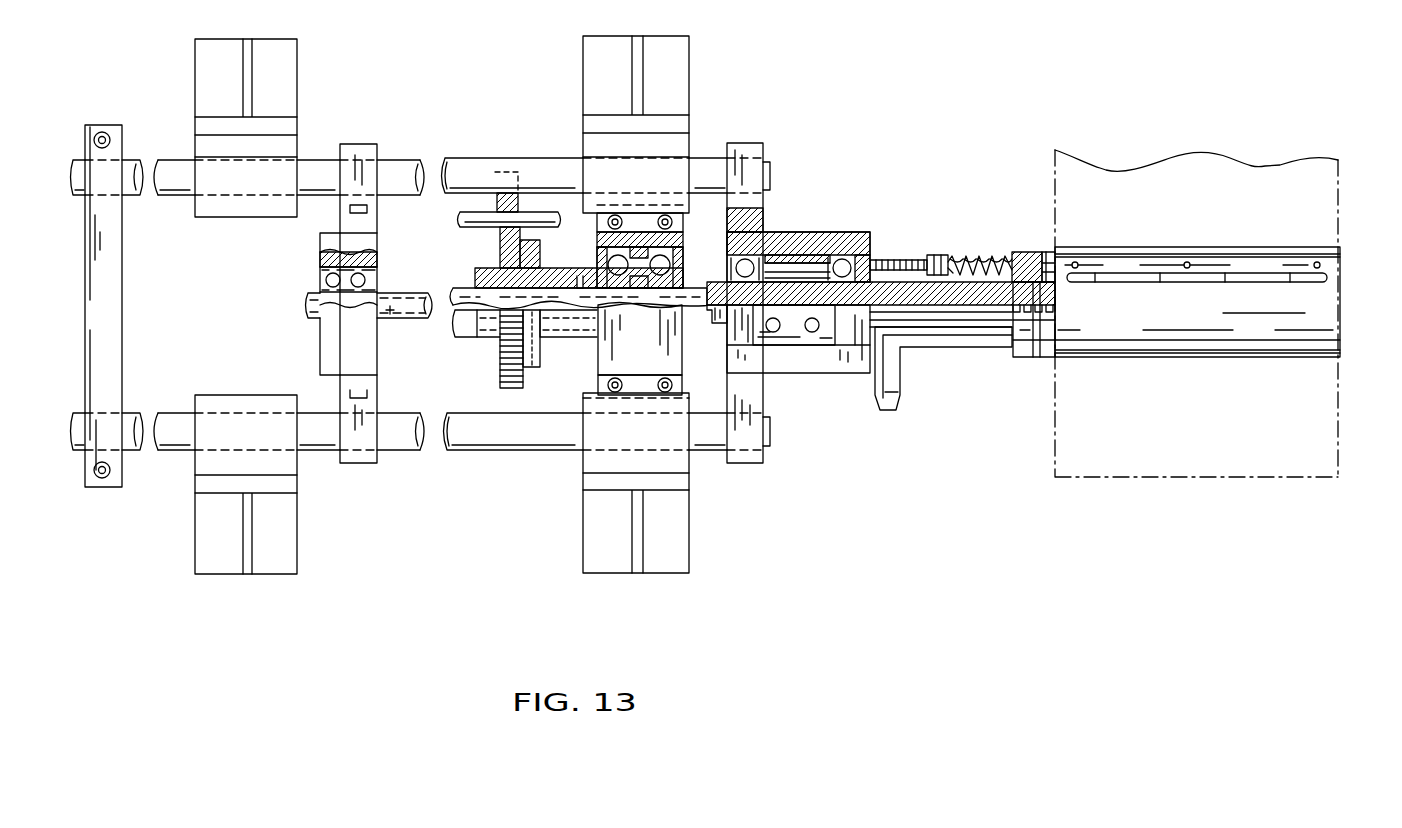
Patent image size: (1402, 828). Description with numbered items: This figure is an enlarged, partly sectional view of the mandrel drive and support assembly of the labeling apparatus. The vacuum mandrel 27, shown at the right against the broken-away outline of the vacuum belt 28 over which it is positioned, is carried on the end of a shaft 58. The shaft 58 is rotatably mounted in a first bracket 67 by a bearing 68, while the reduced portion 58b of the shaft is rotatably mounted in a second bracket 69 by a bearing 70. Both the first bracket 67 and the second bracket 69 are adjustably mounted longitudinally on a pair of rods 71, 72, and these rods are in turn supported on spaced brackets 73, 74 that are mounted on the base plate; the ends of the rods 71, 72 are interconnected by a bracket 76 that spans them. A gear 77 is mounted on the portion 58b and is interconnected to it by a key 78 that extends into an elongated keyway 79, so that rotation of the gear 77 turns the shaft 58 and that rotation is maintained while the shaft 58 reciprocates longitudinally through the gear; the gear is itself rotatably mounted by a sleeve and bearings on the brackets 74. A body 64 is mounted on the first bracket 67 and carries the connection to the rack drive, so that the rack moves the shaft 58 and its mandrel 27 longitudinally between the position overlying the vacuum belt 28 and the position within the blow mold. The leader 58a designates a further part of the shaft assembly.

The vacuum mandrel 27 is at (1158, 335).
The endless vacuum belt 28 is at (1338, 182).
The shaft 58 is at (963, 300).
The bracket arm 58a is at (913, 305).
The portion of shaft 58b is at (390, 312).
The body 64 is at (808, 242).
The first bracket 67 is at (765, 212).
The bearing 68 is at (870, 245).
The second bracket 69 is at (368, 243).
The bearing 70 is at (377, 282).
The rod 71 is at (467, 162).
The rod 72 is at (512, 432).
The bracket 73 is at (290, 70).
The bracket 74 is at (680, 70).
The bracket 76 is at (92, 256).
The gear 77 is at (537, 366).
The key 78 is at (463, 300).
The elongated keyway 79 is at (551, 268).